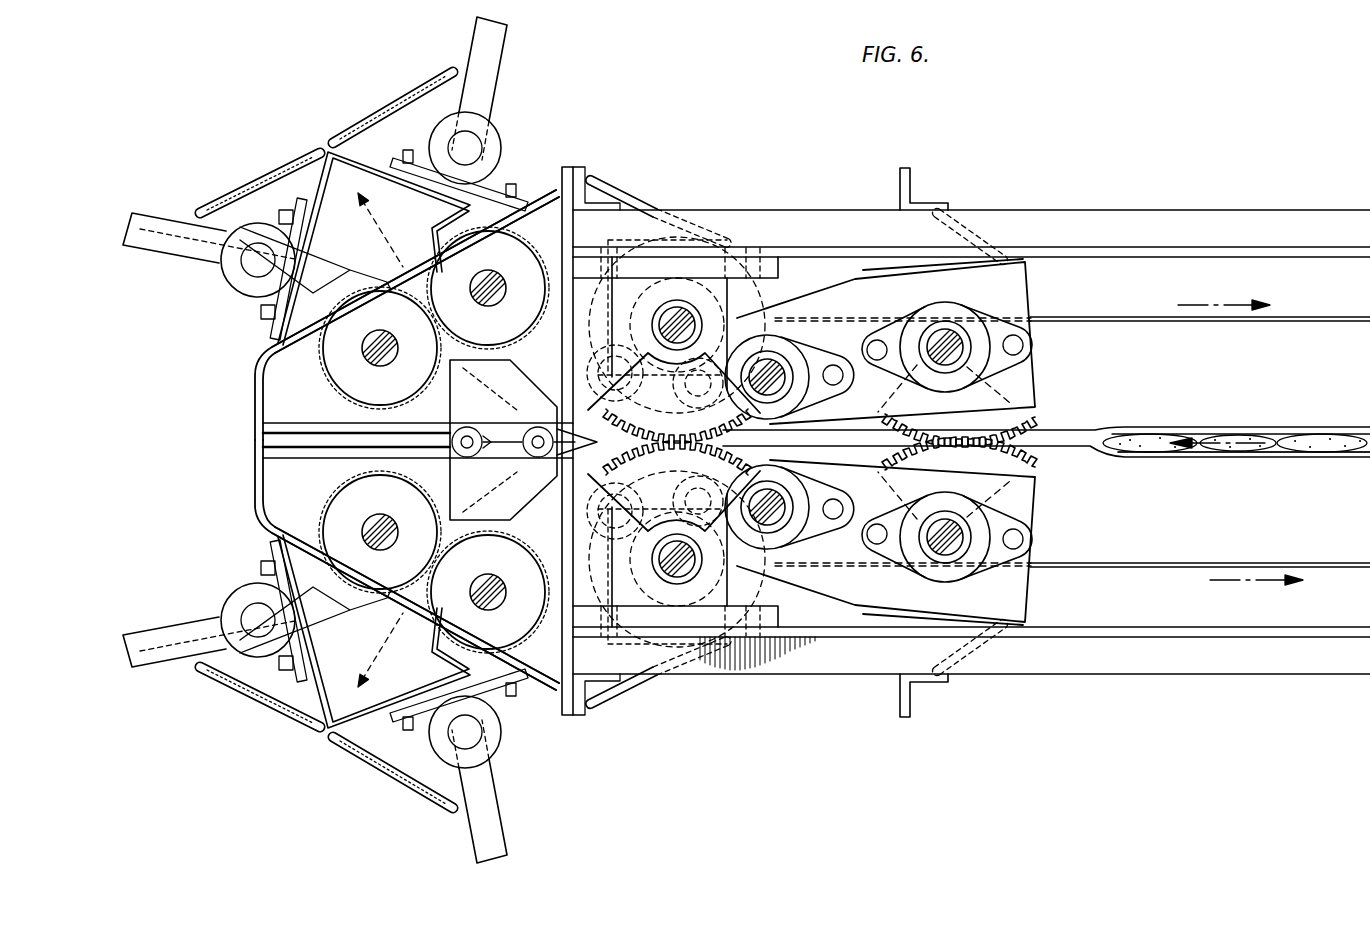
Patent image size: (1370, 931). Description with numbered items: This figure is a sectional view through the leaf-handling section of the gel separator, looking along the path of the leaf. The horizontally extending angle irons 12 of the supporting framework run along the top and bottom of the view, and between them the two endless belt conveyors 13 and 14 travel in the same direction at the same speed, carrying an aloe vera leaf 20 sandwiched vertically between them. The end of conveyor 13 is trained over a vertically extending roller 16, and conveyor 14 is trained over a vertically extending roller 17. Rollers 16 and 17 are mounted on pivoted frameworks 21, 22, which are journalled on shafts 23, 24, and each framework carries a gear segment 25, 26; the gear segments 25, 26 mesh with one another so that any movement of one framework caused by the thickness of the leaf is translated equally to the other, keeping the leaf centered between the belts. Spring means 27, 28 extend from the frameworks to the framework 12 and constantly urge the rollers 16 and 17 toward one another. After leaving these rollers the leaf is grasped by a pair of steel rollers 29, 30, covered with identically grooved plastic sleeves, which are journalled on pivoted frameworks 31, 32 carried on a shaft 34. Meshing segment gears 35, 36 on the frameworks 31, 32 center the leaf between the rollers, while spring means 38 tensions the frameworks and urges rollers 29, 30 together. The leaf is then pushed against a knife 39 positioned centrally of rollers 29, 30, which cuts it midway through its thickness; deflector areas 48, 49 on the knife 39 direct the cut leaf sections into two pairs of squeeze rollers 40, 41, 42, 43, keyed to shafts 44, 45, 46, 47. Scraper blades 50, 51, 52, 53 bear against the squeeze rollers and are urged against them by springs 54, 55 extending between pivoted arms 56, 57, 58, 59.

The horizontally extending angle irons 12 is at (1193, 208).
The endless belt conveyor 13 is at (1228, 455).
The endless belt conveyor 14 is at (1153, 428).
The vertically extending roller 16 is at (825, 475).
The vertically extending roller 17 is at (801, 377).
The aloe vera leaf 20 is at (1328, 435).
The pivoted framework 21 is at (1042, 578).
The pivoted framework 22 is at (1037, 378).
The shaft 23 is at (955, 335).
The shaft 24 is at (1030, 507).
The gear segment 25 is at (1025, 418).
The gear segment 26 is at (1025, 470).
The spring means 27 is at (990, 240).
The spring means 28 is at (985, 660).
The steel roller 29 is at (670, 559).
The steel roller 30 is at (671, 325).
The pivoted framework 31 is at (732, 283).
The pivoted framework 32 is at (770, 600).
The shaft 34 is at (692, 323).
The segment gear 35 is at (640, 196).
The segment gear 36 is at (570, 462).
The spring means 38 is at (640, 688).
The knife 39 is at (467, 427).
The squeeze roller 40 is at (345, 392).
The squeeze roller 41 is at (555, 252).
The squeeze roller 42 is at (338, 480).
The squeeze roller 43 is at (546, 694).
The shaft 44 is at (380, 535).
The shaft 45 is at (490, 600).
The shaft 46 is at (384, 342).
The shaft 47 is at (492, 282).
The deflector area 48 is at (482, 487).
The deflector area 49 is at (537, 427).
The scraper blade 50 is at (378, 273).
The scraper blade 51 is at (425, 252).
The scraper blade 52 is at (378, 602).
The scraper blade 53 is at (408, 640).
The spring 54 is at (250, 176).
The spring 55 is at (392, 104).
The pivoted arm 56 is at (497, 812).
The pivoted arm 57 is at (172, 628).
The pivoted arm 58 is at (177, 245).
The pivoted arm 59 is at (487, 86).